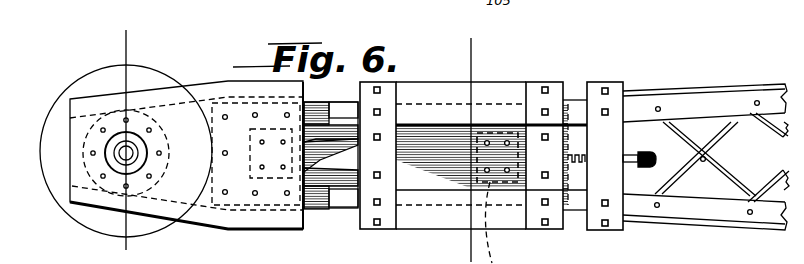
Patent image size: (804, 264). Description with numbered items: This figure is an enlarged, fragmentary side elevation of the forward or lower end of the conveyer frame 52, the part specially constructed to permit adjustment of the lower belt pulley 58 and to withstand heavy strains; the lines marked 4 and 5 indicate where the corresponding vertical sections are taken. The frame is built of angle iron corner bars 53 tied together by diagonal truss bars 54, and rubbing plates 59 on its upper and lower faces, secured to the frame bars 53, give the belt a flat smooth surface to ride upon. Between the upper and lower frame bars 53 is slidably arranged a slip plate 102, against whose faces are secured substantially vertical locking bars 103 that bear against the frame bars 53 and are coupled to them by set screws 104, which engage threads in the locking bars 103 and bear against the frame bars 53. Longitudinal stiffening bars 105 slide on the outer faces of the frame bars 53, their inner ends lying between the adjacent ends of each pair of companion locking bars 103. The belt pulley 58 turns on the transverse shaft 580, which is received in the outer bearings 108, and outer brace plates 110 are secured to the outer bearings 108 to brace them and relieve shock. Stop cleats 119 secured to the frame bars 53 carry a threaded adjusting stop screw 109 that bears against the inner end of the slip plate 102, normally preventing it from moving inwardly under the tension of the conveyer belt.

The section line 4- 4 is at (92, 33).
The section line 5- 5 is at (428, 43).
The conveyer frame 52 is at (718, 154).
The angle iron corner bars 53 is at (750, 243).
The truss bars 54 is at (710, 158).
The belt pulley 58 is at (77, 89).
The rubbing plates 59 is at (745, 90).
The slip plate 102 is at (331, 155).
The locking bars 103 is at (364, 229).
The set screws 104 is at (379, 110).
The stiffening bars 105 is at (432, 88).
The outer bearings 108 is at (115, 156).
The adjusting stop screw 109 is at (632, 164).
The outer brace plates 110 is at (236, 154).
The stop cleats 119 is at (614, 87).
The transverse shaft 580 is at (112, 162).